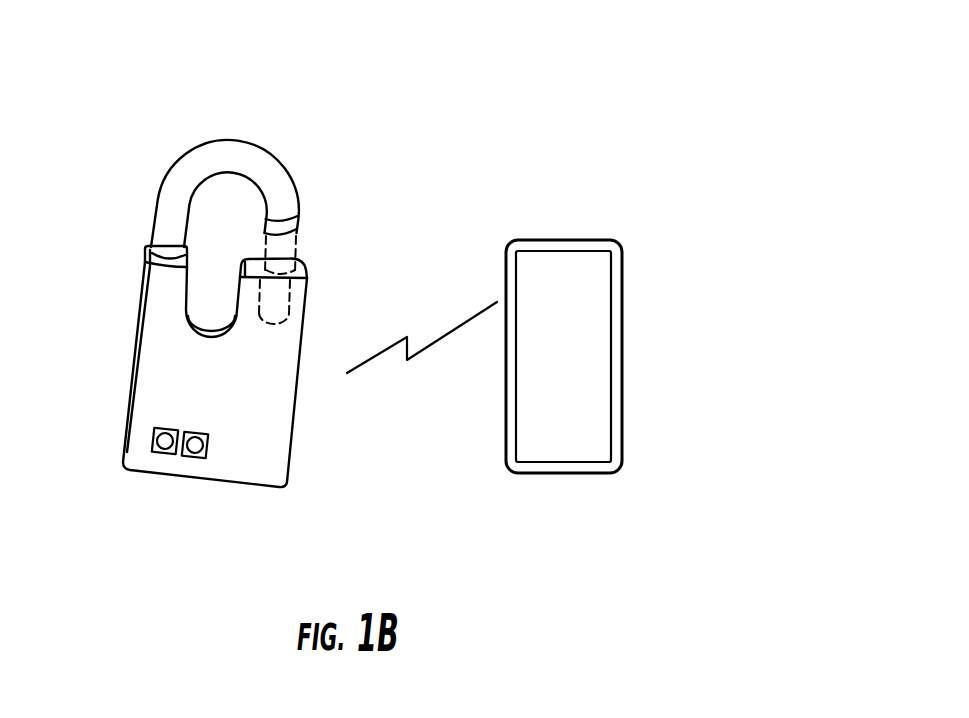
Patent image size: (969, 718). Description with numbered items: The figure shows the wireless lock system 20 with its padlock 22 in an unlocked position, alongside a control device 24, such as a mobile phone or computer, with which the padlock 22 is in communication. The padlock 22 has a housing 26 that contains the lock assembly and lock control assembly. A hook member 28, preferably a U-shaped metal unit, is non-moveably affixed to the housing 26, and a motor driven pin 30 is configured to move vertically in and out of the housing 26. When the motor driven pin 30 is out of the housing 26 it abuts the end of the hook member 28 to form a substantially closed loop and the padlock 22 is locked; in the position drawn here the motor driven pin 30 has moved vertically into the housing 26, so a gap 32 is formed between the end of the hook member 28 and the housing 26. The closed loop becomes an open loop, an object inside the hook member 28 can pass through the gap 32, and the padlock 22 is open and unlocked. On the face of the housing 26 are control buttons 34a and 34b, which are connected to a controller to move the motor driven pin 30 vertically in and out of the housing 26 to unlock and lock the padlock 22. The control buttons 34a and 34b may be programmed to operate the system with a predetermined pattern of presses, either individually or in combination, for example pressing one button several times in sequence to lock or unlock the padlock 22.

The wireless lock system 20 is at (492, 32).
The padlock 22 is at (98, 309).
The control device 24 is at (680, 243).
The housing 26 is at (333, 423).
The hook member 28 is at (188, 150).
The motor driven pin 30 is at (338, 313).
The gap 32 is at (356, 213).
The control button 34a is at (172, 528).
The control button 34b is at (293, 537).